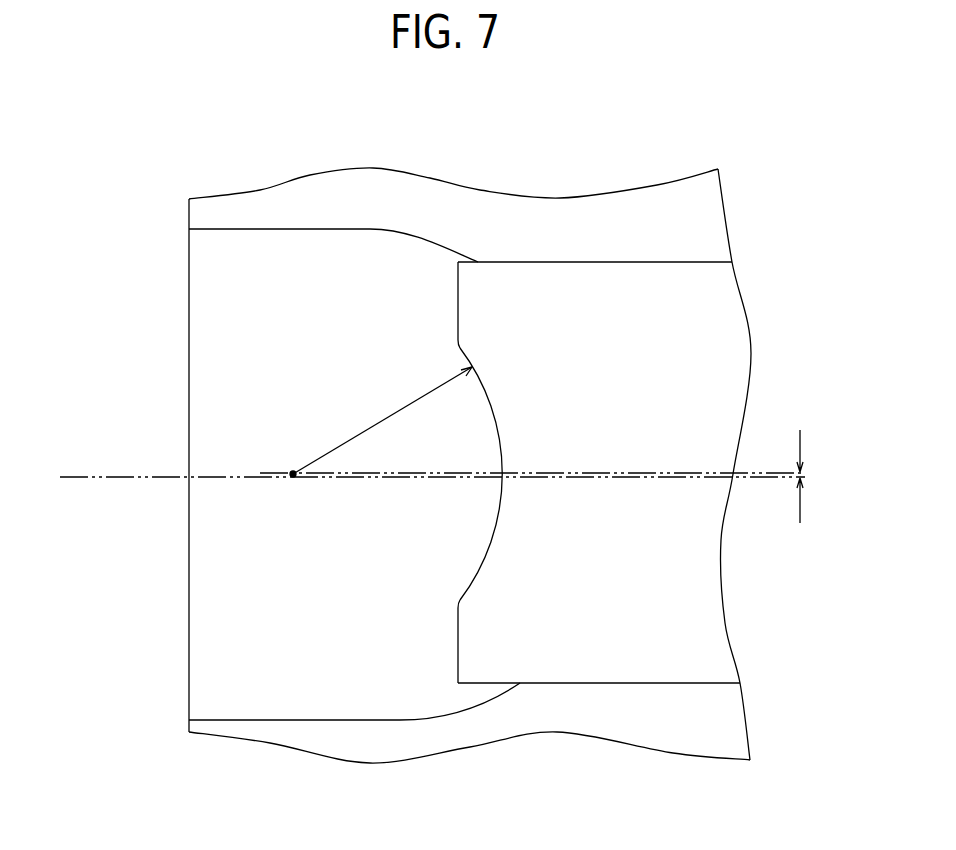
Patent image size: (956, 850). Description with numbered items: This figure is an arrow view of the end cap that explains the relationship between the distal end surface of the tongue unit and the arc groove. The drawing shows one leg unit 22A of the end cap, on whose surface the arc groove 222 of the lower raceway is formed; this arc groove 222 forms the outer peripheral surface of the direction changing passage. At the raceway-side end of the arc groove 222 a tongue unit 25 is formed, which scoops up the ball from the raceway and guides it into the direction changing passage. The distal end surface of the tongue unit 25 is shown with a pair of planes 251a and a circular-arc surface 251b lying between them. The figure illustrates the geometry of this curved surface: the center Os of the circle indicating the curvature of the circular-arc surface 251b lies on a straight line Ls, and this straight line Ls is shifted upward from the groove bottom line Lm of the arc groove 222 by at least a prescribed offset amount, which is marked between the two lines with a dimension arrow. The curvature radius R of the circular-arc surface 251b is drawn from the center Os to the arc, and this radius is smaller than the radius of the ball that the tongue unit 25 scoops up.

The leg unit 22A is at (657, 183).
The arc groove 222 is at (210, 298).
The tongue unit 25 is at (612, 650).
The plane 251a is at (458, 299).
The circular-arc surface 251b is at (500, 501).
The curvature radius R is at (380, 422).
The center Os is at (293, 473).
The groove bottom line Lm is at (133, 477).
The straight line Ls is at (612, 472).